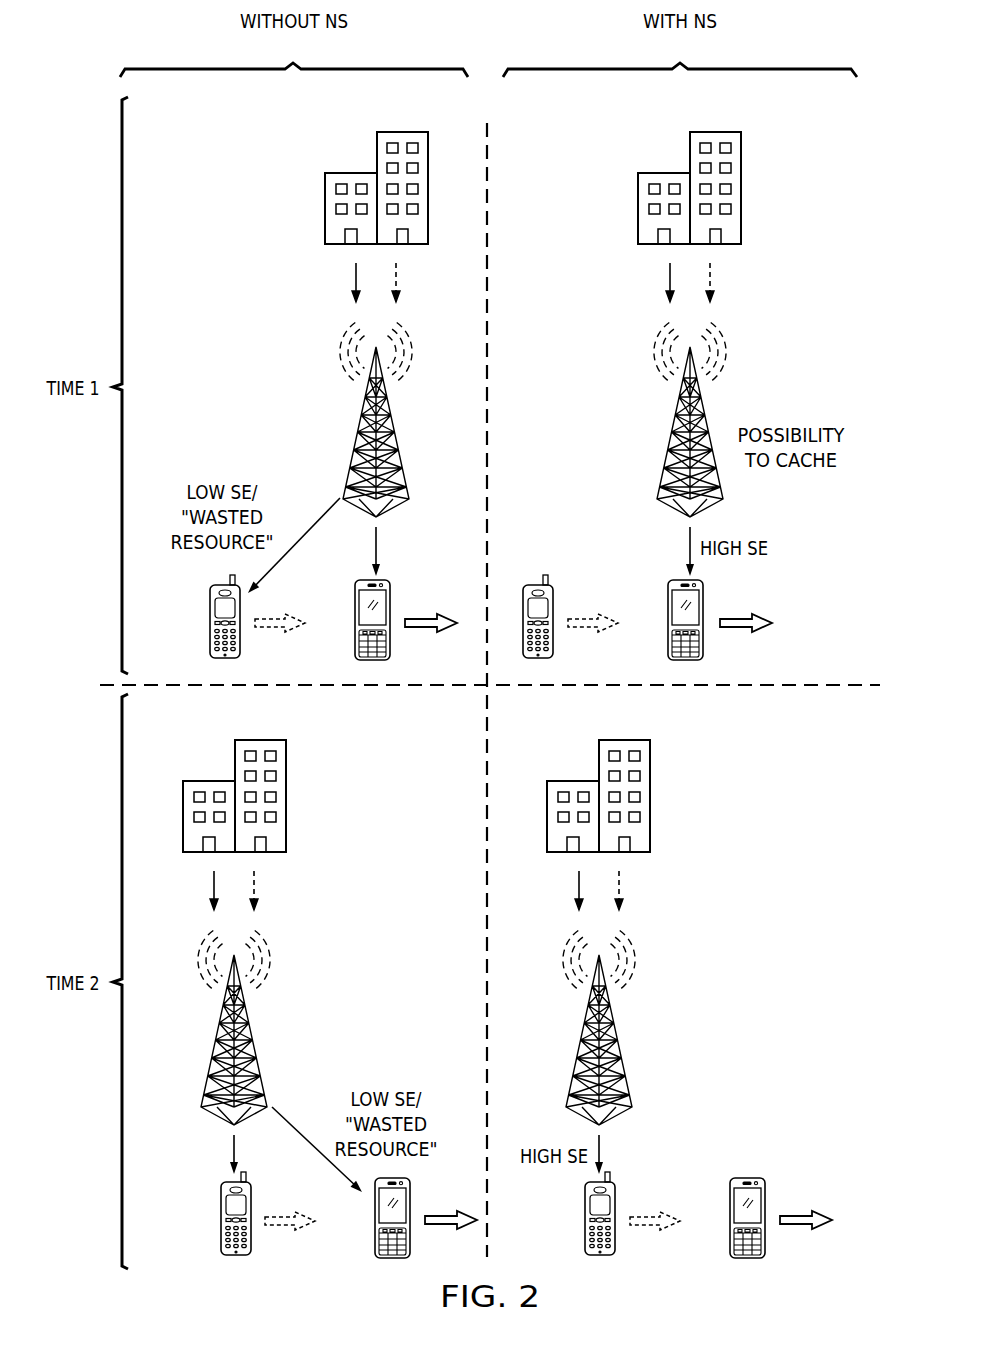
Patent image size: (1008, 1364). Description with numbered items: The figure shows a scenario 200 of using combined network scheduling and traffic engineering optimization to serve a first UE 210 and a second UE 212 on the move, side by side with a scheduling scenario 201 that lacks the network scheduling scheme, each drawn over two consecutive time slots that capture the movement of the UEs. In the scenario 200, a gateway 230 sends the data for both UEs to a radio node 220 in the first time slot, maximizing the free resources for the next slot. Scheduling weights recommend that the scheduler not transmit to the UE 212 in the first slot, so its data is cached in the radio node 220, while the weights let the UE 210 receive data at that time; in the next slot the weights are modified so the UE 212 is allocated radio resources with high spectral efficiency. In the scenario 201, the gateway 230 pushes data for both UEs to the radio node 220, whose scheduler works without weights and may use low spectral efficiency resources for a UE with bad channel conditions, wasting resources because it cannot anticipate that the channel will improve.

The scenario 200 is at (812, 160).
The scheduling scenario 201 is at (168, 133).
The first UE 210 is at (355, 650).
The second UE 212 is at (211, 650).
The radio node 220 is at (355, 428).
The gateway 230 is at (401, 132).